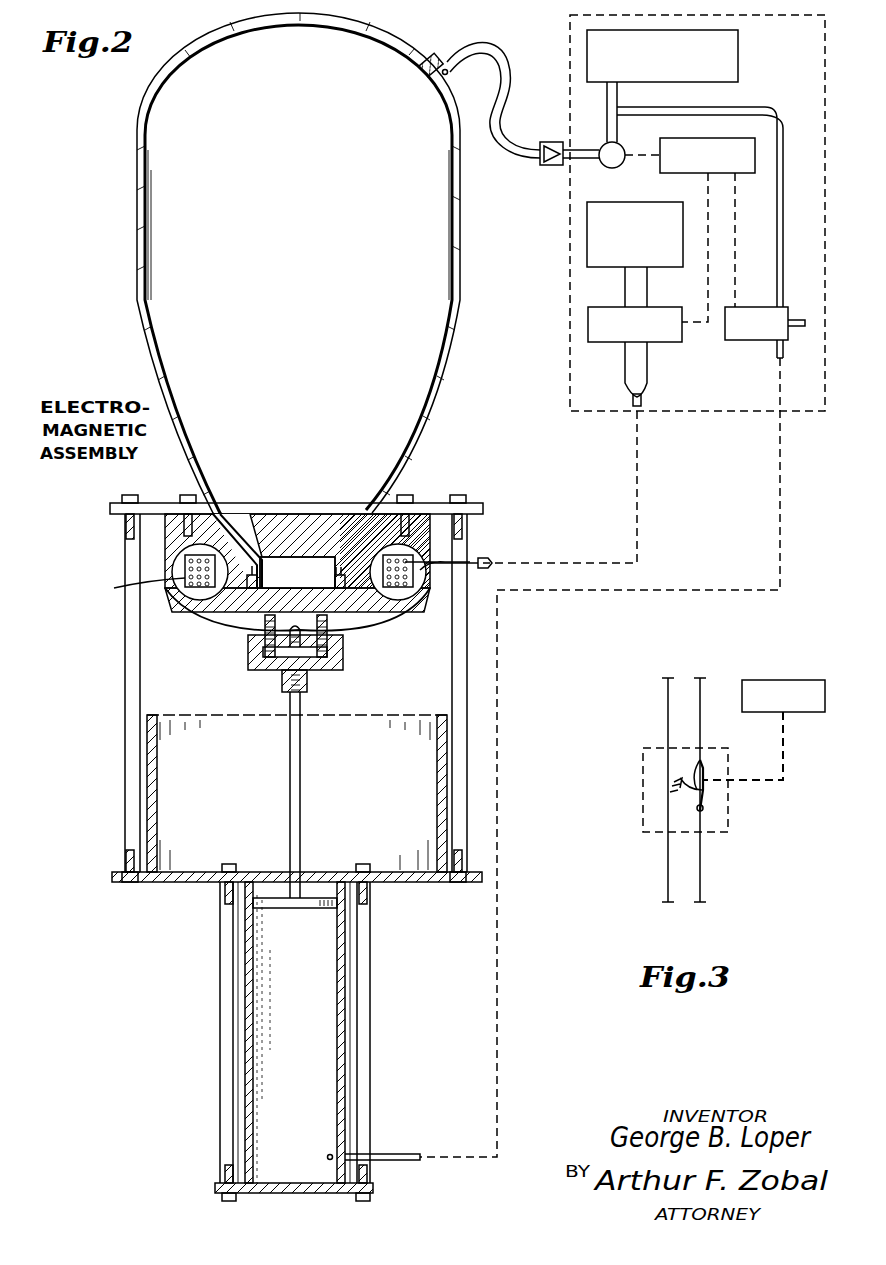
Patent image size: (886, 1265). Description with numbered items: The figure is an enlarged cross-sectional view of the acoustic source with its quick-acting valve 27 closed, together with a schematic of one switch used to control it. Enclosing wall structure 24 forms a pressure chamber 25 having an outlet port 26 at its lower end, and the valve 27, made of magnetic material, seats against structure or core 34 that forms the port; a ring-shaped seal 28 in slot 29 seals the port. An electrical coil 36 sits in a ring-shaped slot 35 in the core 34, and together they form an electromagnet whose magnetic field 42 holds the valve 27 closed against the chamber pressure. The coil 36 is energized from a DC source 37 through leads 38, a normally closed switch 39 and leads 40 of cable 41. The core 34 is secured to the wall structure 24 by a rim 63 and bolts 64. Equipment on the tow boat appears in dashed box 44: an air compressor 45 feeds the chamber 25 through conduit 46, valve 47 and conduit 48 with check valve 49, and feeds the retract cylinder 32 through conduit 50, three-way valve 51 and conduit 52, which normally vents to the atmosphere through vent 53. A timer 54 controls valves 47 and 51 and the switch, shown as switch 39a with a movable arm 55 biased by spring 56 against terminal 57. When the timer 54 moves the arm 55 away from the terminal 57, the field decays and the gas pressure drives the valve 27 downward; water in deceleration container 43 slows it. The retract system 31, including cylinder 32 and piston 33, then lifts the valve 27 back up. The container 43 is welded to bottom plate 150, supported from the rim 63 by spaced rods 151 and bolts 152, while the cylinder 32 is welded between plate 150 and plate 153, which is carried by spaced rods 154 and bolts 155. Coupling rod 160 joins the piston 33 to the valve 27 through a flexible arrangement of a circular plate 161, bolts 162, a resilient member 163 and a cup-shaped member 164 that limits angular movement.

In FIG. 2, the enclosing wall structure 24 is at (137, 250).
In FIG. 2, the pressure chamber 25 is at (310, 217).
In FIG. 2, the outlet port 26 is at (300, 557).
In FIG. 2, the quick-acting valve 27 is at (250, 636).
In FIG. 2, the ring-shaped seal 28 is at (248, 576).
In FIG. 2, the slot 29 is at (258, 572).
In FIG. 2, the retract system 31 is at (205, 1031).
In FIG. 2, the retract cylinder 32 is at (250, 1010).
In FIG. 2, the piston 33 is at (325, 908).
In FIG. 2, the structure or core 34 is at (352, 530).
In FIG. 2, the ring-shaped slot 35 is at (185, 566).
In FIG. 2, the electrical coil 36 is at (185, 583).
In FIG. 2, the DC source 37 is at (653, 202).
In FIG. 2, the leads 38 is at (625, 306).
In FIG. 3, the leads 38 is at (700, 726).
In FIG. 2, the normally closed switch 39 is at (603, 342).
In FIG. 3, the switch 39a is at (613, 791).
In FIG. 2, the leads 40 is at (625, 360).
In FIG. 3, the leads 40 is at (700, 880).
In FIG. 2, the cable 41 is at (637, 510).
In FIG. 2, the magnetic field 42 is at (190, 609).
In FIG. 2, the deceleration container 43 is at (160, 872).
In FIG. 2, the dashed box 44 is at (570, 304).
In FIG. 2, the air compressor 45 is at (738, 55).
In FIG. 2, the conduit 46 is at (607, 107).
In FIG. 2, the valve 47 is at (622, 148).
In FIG. 2, the conduit 48 is at (478, 60).
In FIG. 2, the check valve 49 is at (552, 140).
In FIG. 2, the conduit 50 is at (702, 113).
In FIG. 2, the three-way valve 51 is at (756, 341).
In FIG. 2, the conduit 52 is at (780, 510).
In FIG. 2, the vent 53 is at (796, 318).
In FIG. 2, the timer 54 is at (738, 180).
In FIG. 3, the timer 54 is at (764, 730).
In FIG. 3, the movable arm 55 is at (704, 797).
In FIG. 3, the spring 56 is at (700, 812).
In FIG. 3, the terminal 57 is at (700, 760).
In FIG. 2, the rim 63 is at (155, 503).
In FIG. 2, the bolts 64 is at (188, 495).
In FIG. 2, the bottom plate 150 is at (408, 882).
In FIG. 2, the spaced rods 151 is at (125, 670).
In FIG. 2, the bolts 152 is at (458, 503).
In FIG. 2, the plate 153 is at (330, 1193).
In FIG. 2, the spaced rods 154 is at (220, 1050).
In FIG. 2, the bolts 155 is at (360, 866).
In FIG. 2, the coupling rod 160 is at (301, 790).
In FIG. 2, the circular plate 161 is at (256, 670).
In FIG. 2, the bolts 162 is at (265, 640).
In FIG. 2, the resilient member 163 is at (332, 640).
In FIG. 2, the cup-shaped member 164 is at (310, 678).